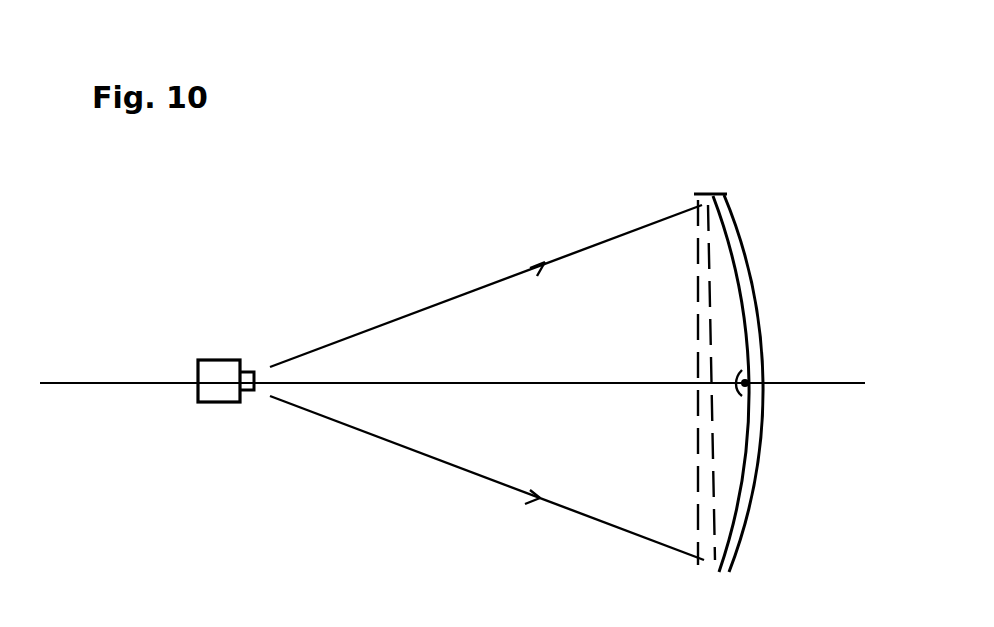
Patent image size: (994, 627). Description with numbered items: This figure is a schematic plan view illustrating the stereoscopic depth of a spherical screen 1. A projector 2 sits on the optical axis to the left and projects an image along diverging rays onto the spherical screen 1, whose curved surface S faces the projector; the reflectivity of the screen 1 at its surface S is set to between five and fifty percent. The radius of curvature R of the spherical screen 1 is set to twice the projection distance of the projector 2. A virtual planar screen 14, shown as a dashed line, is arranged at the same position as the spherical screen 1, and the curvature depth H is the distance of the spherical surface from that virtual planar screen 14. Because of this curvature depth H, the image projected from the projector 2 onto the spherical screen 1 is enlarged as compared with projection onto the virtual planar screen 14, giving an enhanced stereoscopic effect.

The projector 2 is at (221, 401).
The spherical screen 1 is at (763, 470).
The radius of curvature R is at (752, 292).
The curvature depth H is at (752, 358).
The surface S is at (747, 443).
The virtual planar screen 14 is at (703, 488).